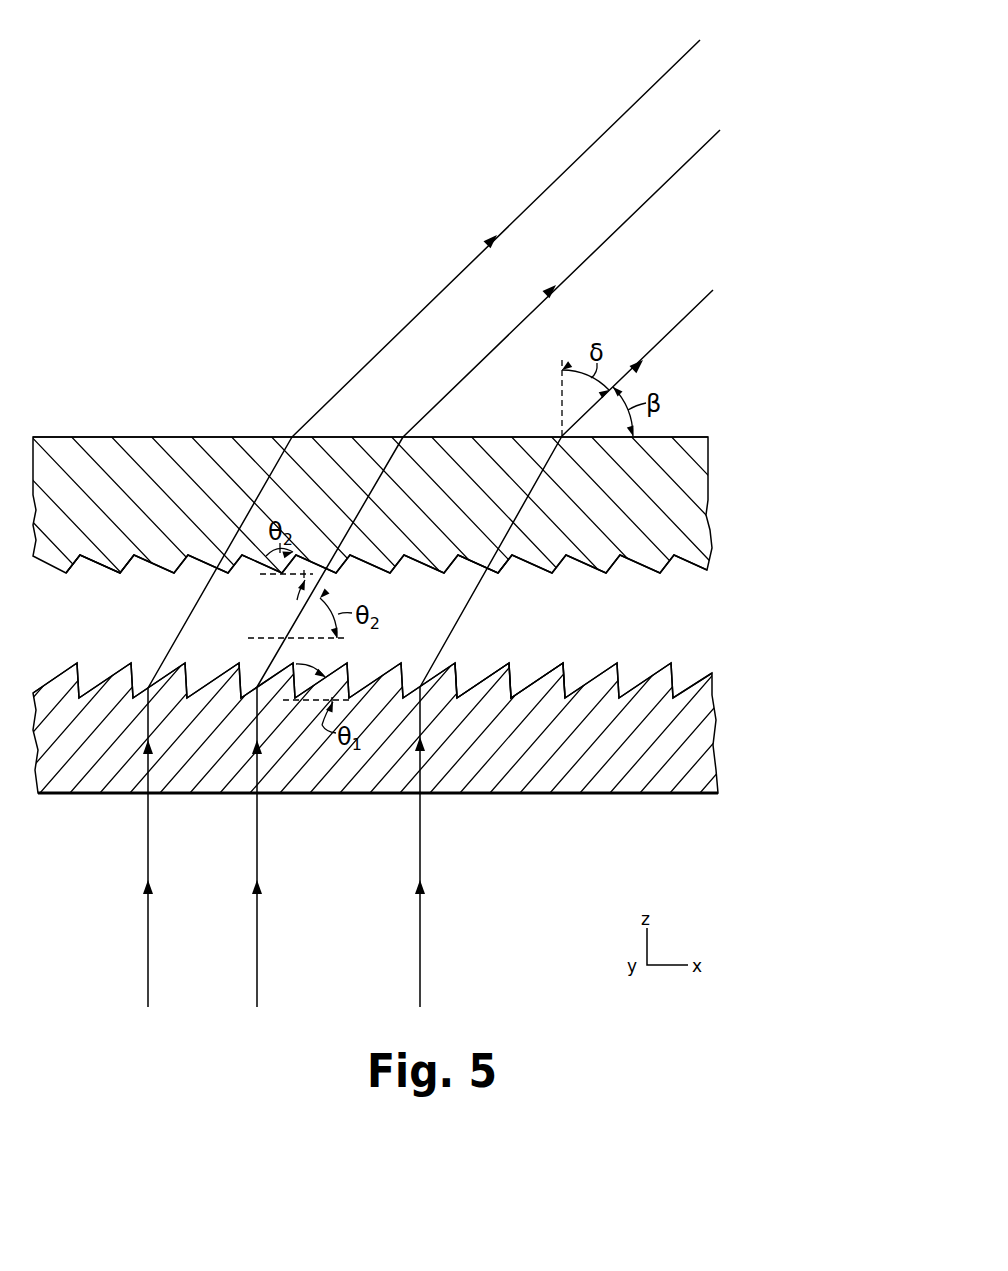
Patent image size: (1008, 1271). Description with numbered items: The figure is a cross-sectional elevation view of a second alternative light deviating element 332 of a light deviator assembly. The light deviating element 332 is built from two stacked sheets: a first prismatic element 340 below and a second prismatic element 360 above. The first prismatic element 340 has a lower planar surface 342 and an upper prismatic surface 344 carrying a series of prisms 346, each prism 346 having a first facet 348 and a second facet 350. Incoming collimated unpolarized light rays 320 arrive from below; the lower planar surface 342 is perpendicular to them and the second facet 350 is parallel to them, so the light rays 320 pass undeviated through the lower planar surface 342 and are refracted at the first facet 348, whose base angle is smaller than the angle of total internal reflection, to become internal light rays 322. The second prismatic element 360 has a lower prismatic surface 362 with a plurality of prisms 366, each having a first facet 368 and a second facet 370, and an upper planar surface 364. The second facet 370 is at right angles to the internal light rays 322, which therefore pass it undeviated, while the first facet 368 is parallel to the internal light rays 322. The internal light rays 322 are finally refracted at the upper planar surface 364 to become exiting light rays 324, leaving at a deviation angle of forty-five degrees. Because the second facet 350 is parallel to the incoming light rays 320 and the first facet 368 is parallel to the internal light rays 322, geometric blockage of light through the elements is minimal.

The incoming collimated light rays 320 is at (420, 836).
The internal light rays 322 is at (462, 612).
The exiting light rays 324 is at (672, 335).
The light deviating element 332 is at (818, 638).
The first prismatic element 340 is at (790, 648).
The lower planar surface 342 is at (620, 793).
The upper prismatic surface 344 is at (723, 640).
The prisms 346 is at (655, 678).
The first facet 348 is at (434, 688).
The second facet 350 is at (465, 685).
The second prismatic element 360 is at (795, 433).
The lower prismatic surface 362 is at (723, 545).
The upper planar surface 364 is at (208, 437).
The prisms 366 is at (205, 558).
The first facet 368 is at (508, 557).
The second facet 370 is at (523, 557).